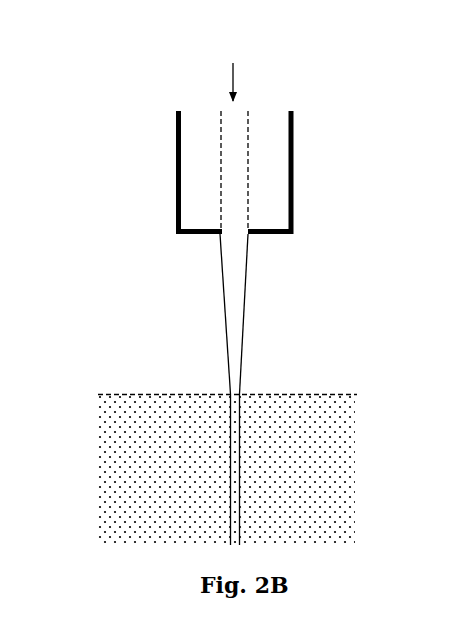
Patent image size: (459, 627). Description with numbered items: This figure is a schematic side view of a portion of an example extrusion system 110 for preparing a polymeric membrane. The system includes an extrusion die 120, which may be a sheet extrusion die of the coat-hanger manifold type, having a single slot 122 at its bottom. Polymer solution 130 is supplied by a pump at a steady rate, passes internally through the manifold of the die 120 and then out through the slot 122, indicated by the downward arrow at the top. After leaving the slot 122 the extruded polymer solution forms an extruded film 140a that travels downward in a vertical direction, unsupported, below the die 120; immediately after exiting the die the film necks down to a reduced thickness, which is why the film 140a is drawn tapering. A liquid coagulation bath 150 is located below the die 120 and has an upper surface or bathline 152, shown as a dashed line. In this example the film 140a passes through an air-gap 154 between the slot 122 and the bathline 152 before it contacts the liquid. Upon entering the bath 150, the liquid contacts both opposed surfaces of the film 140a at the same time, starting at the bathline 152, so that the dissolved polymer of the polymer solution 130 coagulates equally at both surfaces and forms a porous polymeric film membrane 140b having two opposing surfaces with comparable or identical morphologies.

The fluid jet system 110 is at (138, 280).
The extrusion die 120 is at (269, 187).
The slot 122 is at (261, 249).
The polymer solution 130 is at (232, 140).
The extruded film 140a is at (233, 285).
The porous polymeric film membrane 140b is at (241, 442).
The liquid coagulation bath 150 is at (166, 468).
The bathline 152 is at (140, 395).
The jet taper region / standoff distance 154 is at (213, 247).